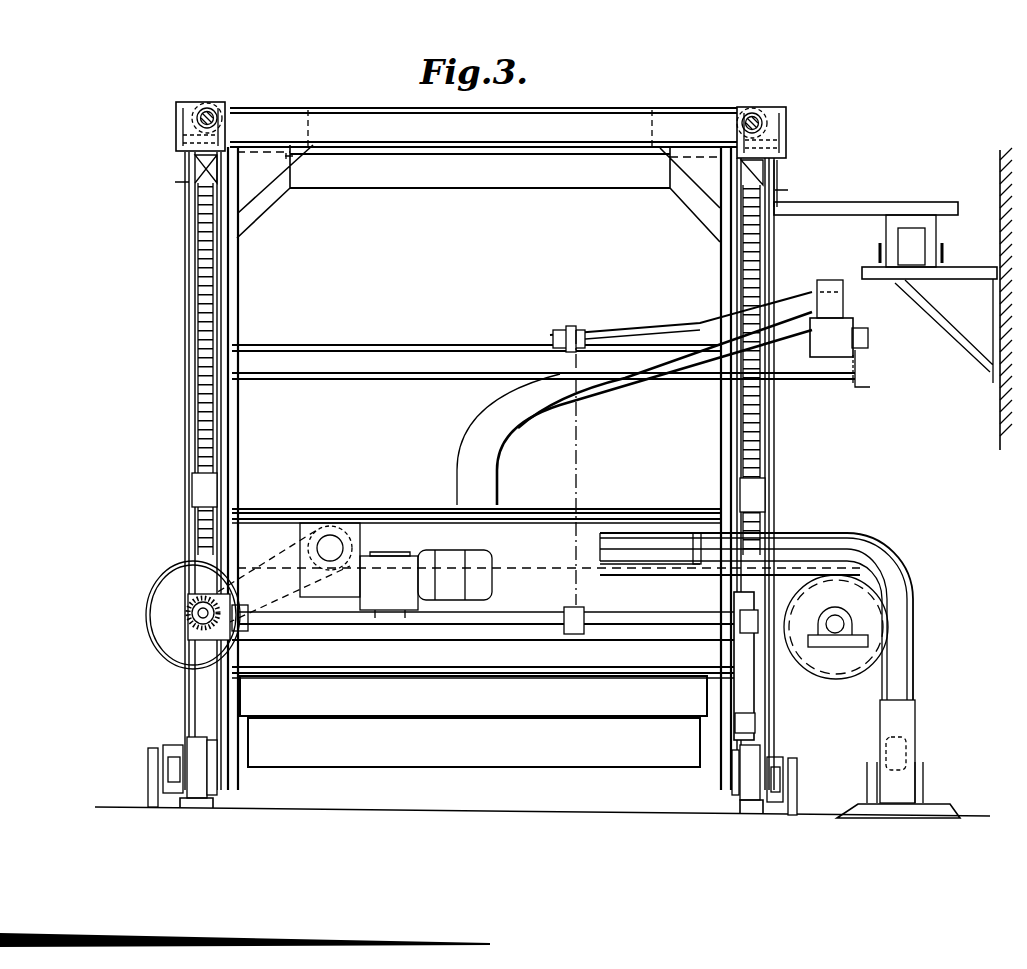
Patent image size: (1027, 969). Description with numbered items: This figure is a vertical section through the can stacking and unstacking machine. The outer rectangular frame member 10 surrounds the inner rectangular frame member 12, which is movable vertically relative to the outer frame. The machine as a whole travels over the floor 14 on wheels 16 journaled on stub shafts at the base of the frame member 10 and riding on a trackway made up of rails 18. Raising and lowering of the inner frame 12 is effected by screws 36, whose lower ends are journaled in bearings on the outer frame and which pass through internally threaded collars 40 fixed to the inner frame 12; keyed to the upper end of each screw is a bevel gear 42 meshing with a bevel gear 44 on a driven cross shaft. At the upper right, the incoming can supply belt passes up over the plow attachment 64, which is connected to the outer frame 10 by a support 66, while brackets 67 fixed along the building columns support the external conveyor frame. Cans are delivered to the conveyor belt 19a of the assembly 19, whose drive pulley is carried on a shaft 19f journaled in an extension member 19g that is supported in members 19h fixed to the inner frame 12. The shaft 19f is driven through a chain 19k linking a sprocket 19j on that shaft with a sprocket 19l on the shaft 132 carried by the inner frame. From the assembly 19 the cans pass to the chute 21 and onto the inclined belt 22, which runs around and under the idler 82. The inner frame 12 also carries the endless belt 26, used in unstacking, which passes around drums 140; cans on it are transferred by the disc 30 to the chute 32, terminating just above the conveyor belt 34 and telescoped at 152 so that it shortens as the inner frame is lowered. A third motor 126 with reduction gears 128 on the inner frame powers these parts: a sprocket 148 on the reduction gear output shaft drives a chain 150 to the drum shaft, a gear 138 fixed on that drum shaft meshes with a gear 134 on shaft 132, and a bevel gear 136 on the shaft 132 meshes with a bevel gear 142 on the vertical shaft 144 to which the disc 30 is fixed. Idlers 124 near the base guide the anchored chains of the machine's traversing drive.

The outer rectangular frame member 10 is at (190, 412).
The inner rectangular frame member 12 is at (230, 419).
The floor 14 is at (380, 813).
The wheels 16 is at (199, 738).
The rails 18 is at (215, 804).
The conveyor assembly 19 is at (855, 311).
The conveyor belt 19a is at (856, 326).
The shaft 19f is at (620, 335).
The extension member 19g is at (560, 346).
The support members 19h is at (455, 345).
The sprocket 19j is at (575, 328).
The chain 19k is at (578, 452).
The sprocket 19l is at (578, 604).
The chute 21 is at (458, 446).
The inclined belt 22 is at (545, 720).
The endless belt 26 is at (530, 565).
The disc 30 is at (780, 540).
The chute 32 is at (918, 718).
The conveyor belt 34 is at (925, 804).
The screws 36 is at (222, 330).
The internally threaded collars 40 is at (196, 487).
The bevel gear 42 is at (177, 138).
The bevel gear 44 is at (208, 104).
The plow attachment 64 is at (936, 243).
The support 66 is at (840, 202).
The brackets 67 is at (952, 338).
The idler 82 is at (470, 700).
The idlers 124 is at (150, 753).
The third motor 126 is at (455, 552).
The reduction gears 128 is at (302, 532).
The shaft 132 is at (520, 615).
The gear 134 is at (245, 628).
The bevel gear 136 is at (733, 618).
The gear 138 is at (178, 596).
The drums 140 is at (168, 635).
The bevel gear 142 is at (722, 600).
The vertical shaft 144 is at (750, 633).
The sprocket 148 is at (352, 535).
The chain 150 is at (286, 605).
The telescoped portion of chute 152 is at (915, 662).